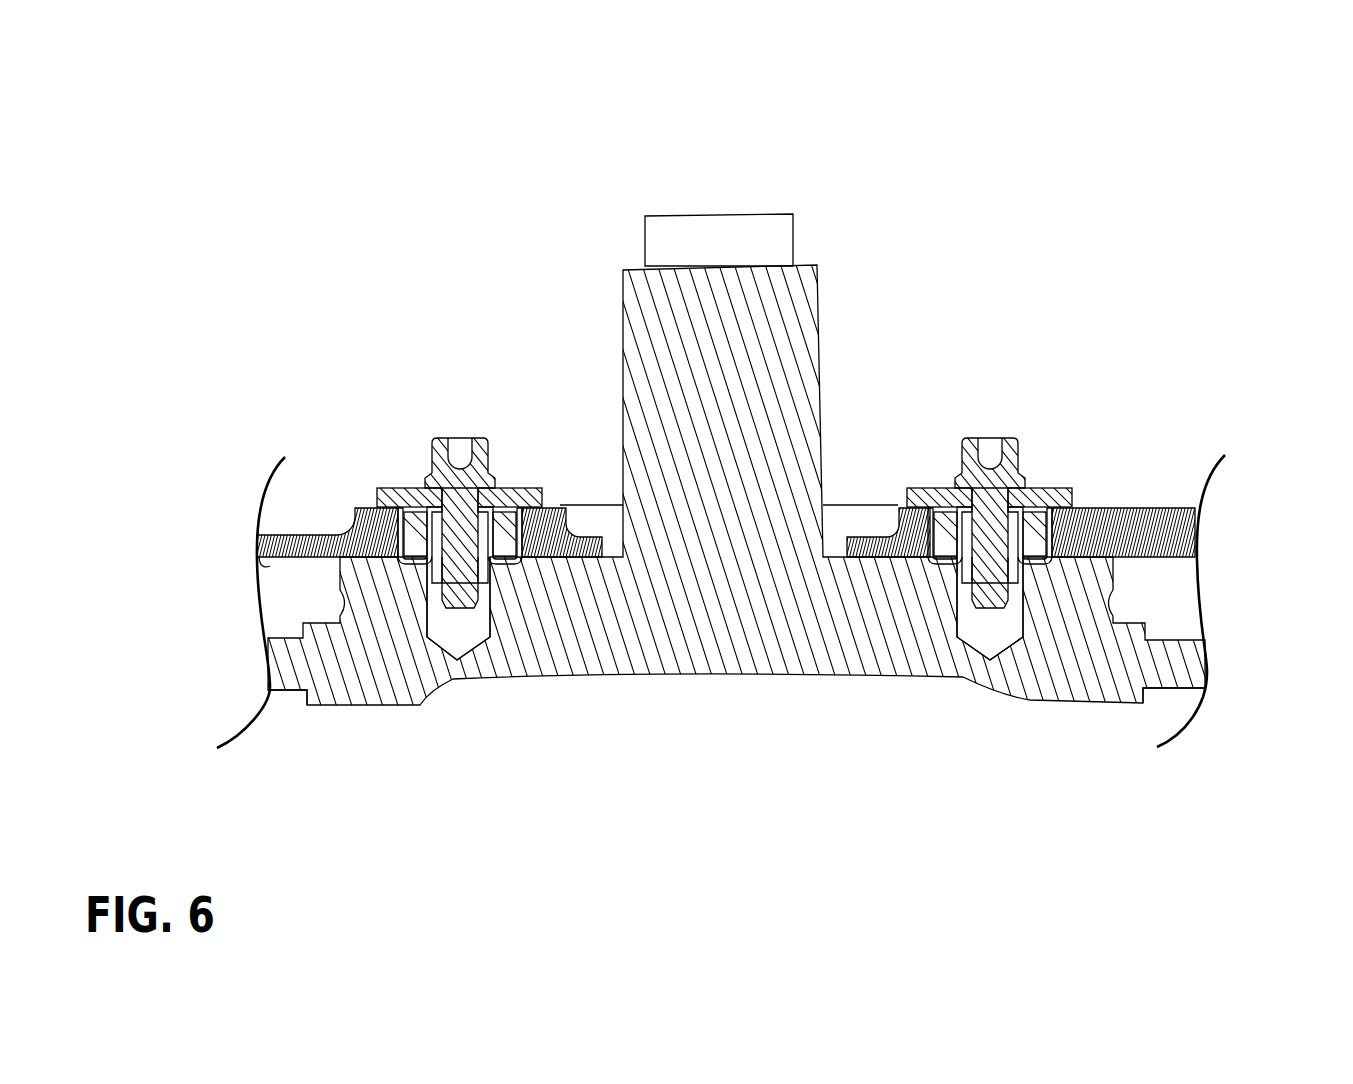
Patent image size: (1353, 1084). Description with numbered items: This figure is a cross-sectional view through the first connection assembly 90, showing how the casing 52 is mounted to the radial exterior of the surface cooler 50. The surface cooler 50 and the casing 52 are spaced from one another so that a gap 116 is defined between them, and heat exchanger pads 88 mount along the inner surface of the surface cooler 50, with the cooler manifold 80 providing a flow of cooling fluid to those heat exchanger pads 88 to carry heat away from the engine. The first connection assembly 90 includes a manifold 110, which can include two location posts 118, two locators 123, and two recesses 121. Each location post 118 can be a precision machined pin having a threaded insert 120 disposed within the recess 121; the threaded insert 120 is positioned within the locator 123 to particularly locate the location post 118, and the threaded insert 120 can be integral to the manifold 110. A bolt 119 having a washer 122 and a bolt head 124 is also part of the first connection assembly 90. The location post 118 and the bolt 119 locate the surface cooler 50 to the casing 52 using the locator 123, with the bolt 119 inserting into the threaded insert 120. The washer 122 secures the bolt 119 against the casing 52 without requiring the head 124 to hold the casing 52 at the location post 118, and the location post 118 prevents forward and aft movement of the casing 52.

The surface cooler 50 is at (1187, 697).
The casing 52 is at (308, 535).
The cooler manifold 80 is at (724, 196).
The heat exchanger pad 88 is at (288, 678).
The first connection assembly 90 is at (485, 206).
The manifold 110 is at (603, 642).
The gap 116 is at (295, 603).
The location post 118 is at (392, 356).
The bolt 119 is at (447, 478).
The threaded insert 120 is at (433, 530).
The recess 121 is at (482, 622).
The washer 122 is at (515, 497).
The locator 123 is at (523, 537).
The bolt head 124 is at (473, 456).